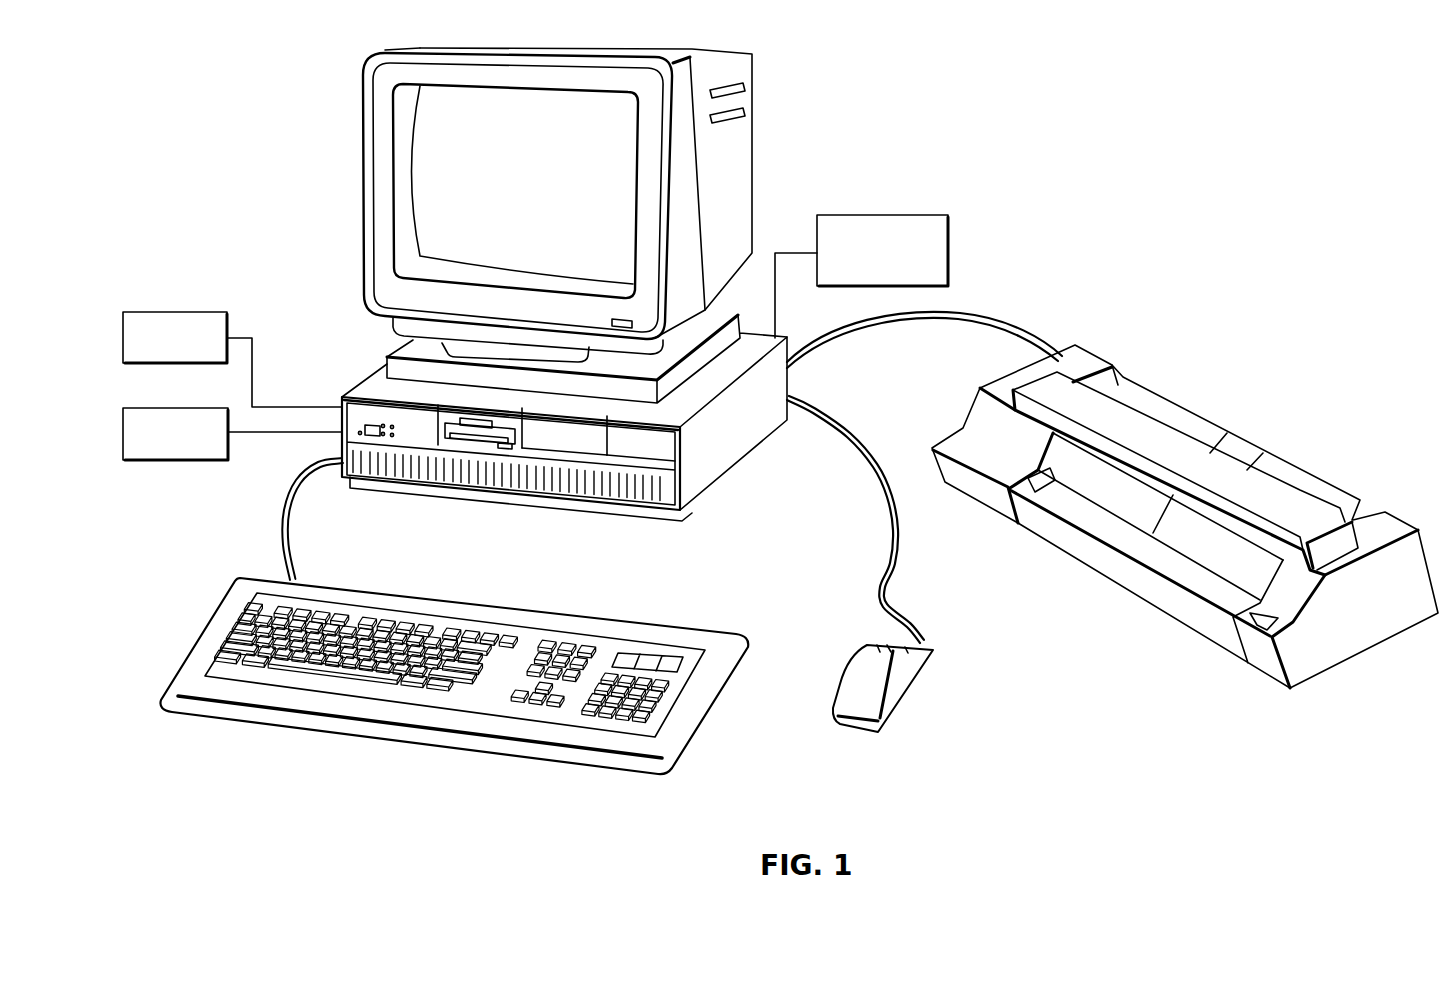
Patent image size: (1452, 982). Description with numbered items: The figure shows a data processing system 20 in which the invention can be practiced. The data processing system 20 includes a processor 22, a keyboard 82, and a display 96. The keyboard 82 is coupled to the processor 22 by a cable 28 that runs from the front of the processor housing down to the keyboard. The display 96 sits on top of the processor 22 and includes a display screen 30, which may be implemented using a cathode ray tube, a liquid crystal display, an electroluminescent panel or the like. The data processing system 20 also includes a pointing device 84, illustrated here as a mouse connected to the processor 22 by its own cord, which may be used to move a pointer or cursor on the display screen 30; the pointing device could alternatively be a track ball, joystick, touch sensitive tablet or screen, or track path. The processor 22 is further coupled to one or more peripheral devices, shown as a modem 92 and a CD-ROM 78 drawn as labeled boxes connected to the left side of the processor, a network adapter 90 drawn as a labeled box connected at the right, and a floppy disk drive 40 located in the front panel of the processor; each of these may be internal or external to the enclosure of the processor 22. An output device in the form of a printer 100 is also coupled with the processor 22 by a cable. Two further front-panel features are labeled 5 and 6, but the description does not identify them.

The data processing system 20 is at (1002, 148).
The processor 22 is at (700, 552).
The display 96 is at (335, 172).
The display screen 30 is at (484, 217).
The floppy disk drive 40 is at (477, 440).
The drive bay 5 is at (612, 465).
The drive bay 6 is at (597, 467).
The modem 92 is at (180, 312).
The CD-ROM 78 is at (188, 462).
The network adapter 90 is at (875, 215).
The cable 28 is at (283, 507).
The keyboard 82 is at (390, 763).
The pointing device 84 is at (927, 679).
The printer 100 is at (1102, 334).